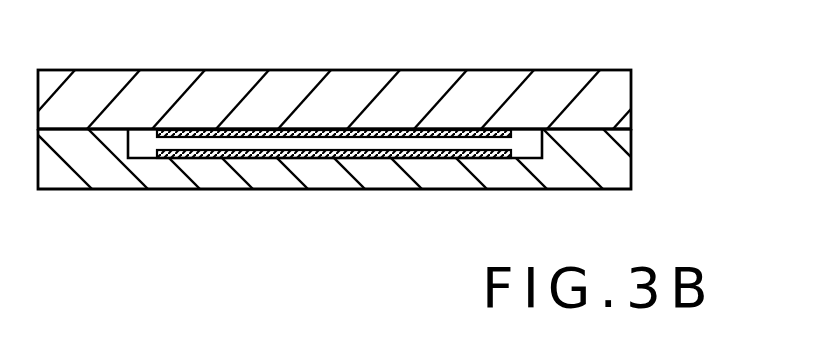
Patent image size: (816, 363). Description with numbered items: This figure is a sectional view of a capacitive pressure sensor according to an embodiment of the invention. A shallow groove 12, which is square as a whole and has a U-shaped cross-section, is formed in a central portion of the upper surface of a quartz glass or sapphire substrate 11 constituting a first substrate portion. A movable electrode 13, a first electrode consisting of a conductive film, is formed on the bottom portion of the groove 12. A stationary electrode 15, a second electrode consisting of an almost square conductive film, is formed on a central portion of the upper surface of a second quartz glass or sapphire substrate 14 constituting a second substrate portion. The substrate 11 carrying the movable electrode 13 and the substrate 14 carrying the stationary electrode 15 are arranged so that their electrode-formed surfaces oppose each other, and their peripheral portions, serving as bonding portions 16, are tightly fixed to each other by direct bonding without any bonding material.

The quartz glass or sapphire substrate 11 is at (607, 167).
The shallow groove 12 is at (523, 148).
The movable electrode 13 is at (322, 159).
The quartz glass or sapphire substrate 14 is at (610, 89).
The stationary electrode 15 is at (293, 130).
The bonding portions 16 is at (587, 128).